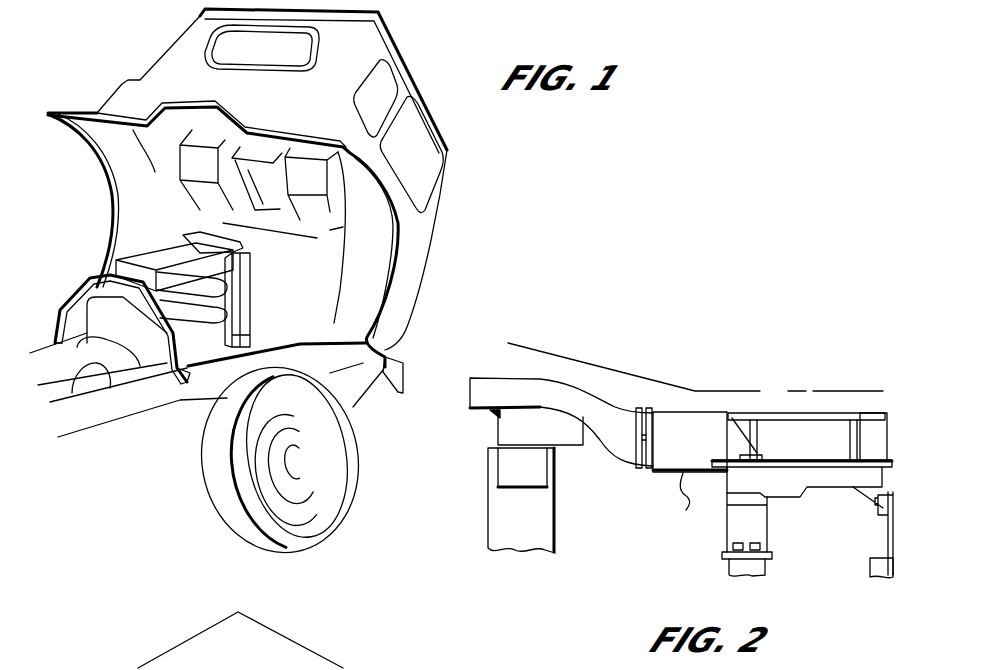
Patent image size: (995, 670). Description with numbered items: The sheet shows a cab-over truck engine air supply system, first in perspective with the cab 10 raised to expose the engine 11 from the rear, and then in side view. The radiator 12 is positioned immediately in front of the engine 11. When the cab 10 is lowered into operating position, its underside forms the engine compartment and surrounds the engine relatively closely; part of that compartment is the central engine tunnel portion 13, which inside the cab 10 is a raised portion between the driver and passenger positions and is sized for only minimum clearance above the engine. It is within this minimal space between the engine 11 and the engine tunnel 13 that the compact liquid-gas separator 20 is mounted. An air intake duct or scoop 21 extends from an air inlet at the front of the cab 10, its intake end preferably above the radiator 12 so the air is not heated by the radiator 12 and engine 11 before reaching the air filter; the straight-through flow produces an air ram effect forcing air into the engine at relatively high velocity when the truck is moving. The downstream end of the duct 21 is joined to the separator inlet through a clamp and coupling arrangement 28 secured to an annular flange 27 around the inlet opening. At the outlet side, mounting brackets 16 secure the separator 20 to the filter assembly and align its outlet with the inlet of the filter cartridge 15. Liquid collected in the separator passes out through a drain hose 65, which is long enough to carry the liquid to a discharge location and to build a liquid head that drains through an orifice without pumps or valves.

In FIG. 1, the cab 10 is at (382, 50).
In FIG. 1, the engine 11 is at (103, 322).
In FIG. 2, the engine 11 is at (733, 568).
In FIG. 1, the radiator 12 is at (243, 278).
In FIG. 2, the radiator 12 is at (493, 518).
In FIG. 1, the engine tunnel portion 13 is at (248, 170).
In FIG. 2, the engine tunnel portion 13 is at (765, 400).
In FIG. 1, the cartridge 15 is at (110, 255).
In FIG. 2, the cartridge 15 is at (823, 415).
In FIG. 2, the mounting brackets 16 is at (737, 440).
In FIG. 1, the liquid-gas separator 20 is at (146, 258).
In FIG. 2, the liquid-gas separator 20 is at (698, 412).
In FIG. 2, the air intake duct or scoop 21 is at (500, 387).
In FIG. 2, the annular flange 27 is at (648, 477).
In FIG. 2, the clamp and coupling arrangement 28 is at (640, 470).
In FIG. 2, the drain hose 65 is at (690, 505).